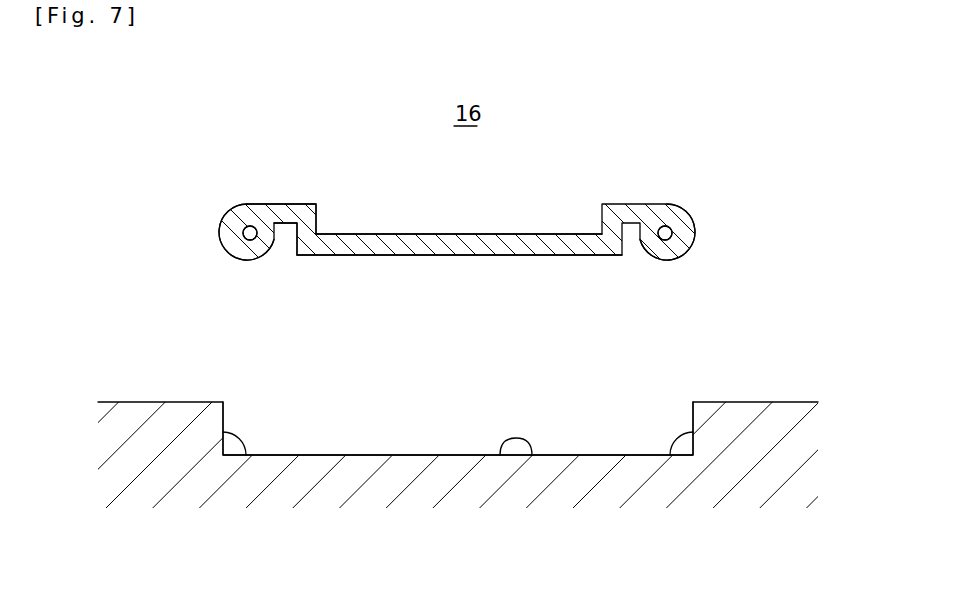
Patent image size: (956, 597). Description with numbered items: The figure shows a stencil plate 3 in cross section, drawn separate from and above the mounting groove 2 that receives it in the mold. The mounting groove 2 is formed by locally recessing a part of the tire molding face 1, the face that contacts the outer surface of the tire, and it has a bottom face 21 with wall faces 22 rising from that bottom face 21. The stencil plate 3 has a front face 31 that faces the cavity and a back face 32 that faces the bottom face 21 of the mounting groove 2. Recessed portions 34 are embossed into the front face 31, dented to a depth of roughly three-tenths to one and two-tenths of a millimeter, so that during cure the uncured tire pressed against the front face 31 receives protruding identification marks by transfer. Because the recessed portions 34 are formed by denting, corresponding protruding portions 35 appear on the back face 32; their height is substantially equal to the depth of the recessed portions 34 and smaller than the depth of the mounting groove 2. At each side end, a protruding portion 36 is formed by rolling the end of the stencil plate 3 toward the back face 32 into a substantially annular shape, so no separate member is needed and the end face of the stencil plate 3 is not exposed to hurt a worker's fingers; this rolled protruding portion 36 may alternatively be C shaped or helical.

The tire molding face 1 is at (150, 402).
The mounting groove 2 is at (581, 412).
The bottom face 21 is at (532, 457).
The wall faces 22 is at (246, 457).
The stencil plate 3 is at (556, 210).
The front face 31 is at (286, 204).
The back face 32 is at (296, 255).
The recessed portions 34 is at (421, 234).
The protruding portions 35 is at (424, 256).
The protruding portion 36 is at (247, 259).